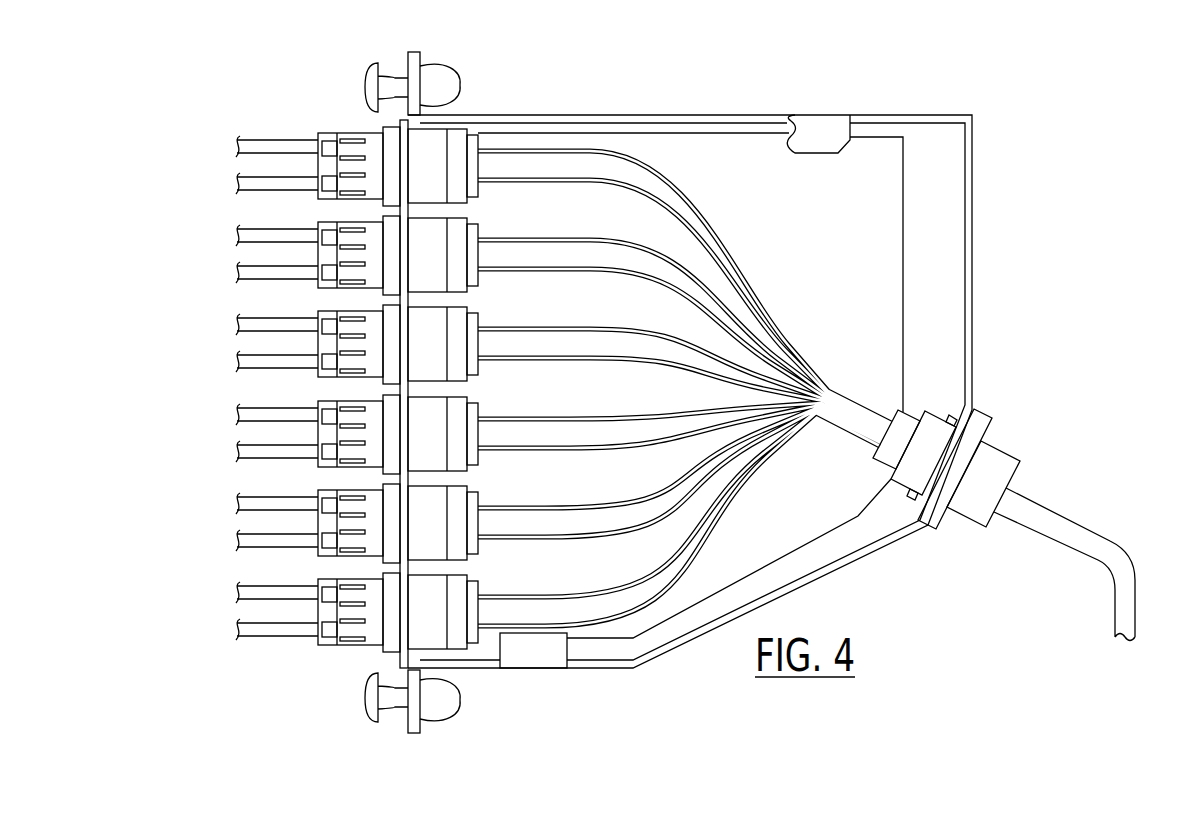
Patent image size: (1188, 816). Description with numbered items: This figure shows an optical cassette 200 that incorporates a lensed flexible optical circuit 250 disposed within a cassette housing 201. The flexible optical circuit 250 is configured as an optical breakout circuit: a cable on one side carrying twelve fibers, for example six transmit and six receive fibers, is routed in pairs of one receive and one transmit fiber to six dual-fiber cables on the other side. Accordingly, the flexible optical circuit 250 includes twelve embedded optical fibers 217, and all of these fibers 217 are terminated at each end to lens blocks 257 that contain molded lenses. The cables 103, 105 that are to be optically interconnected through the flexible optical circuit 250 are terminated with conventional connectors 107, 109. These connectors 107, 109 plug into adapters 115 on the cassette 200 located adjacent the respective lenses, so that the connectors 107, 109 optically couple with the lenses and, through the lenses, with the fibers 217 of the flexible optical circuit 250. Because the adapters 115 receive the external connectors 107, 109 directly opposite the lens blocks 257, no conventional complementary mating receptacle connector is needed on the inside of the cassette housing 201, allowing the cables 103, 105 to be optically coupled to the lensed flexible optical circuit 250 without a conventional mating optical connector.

The optical cassette 200 is at (654, 386).
The cassette housing 201 is at (972, 148).
The lensed flexible optical circuit 250 is at (903, 292).
The adapter 115 is at (443, 389).
The connector 109 is at (336, 399).
The cable 105 is at (245, 388).
The lens block 257 is at (687, 393).
The optical fiber 217 is at (707, 282).
The connector 107 is at (1000, 440).
The cable 103 is at (1050, 503).